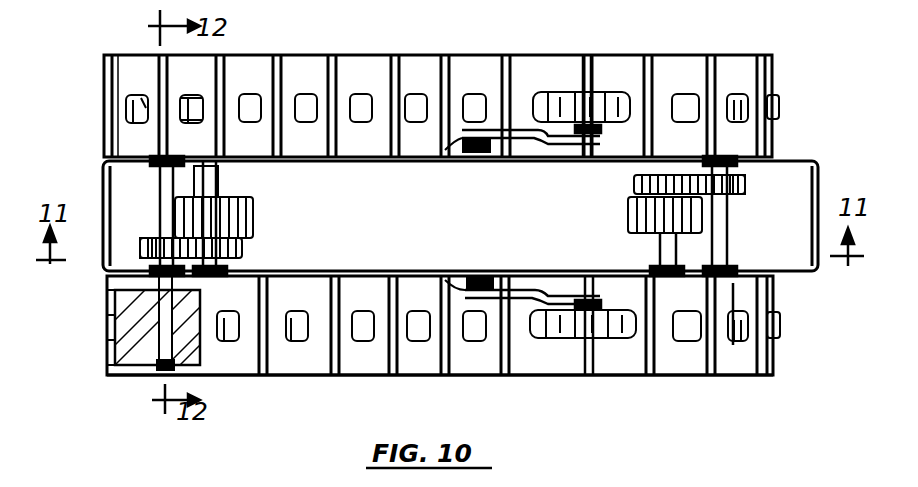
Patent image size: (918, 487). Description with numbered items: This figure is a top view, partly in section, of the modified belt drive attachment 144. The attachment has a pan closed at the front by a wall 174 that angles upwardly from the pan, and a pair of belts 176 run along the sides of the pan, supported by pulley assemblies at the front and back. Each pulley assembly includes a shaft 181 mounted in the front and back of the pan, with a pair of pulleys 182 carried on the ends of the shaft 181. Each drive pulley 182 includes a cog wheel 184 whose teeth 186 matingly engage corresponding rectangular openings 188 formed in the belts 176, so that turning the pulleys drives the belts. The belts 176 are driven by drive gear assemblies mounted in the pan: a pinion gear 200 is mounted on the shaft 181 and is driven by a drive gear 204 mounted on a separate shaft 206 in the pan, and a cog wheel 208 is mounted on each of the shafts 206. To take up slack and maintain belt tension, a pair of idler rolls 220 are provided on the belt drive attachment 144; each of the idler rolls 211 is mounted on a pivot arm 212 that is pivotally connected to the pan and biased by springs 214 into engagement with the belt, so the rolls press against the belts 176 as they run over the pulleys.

The belt drive attachment 144 is at (733, 372).
The front wall 174 is at (806, 166).
The belts 176 is at (776, 360).
The shaft 181 is at (120, 184).
The pulleys 182 is at (782, 105).
The cog wheel 184 is at (193, 352).
The teeth 186 is at (192, 95).
The rectangular openings 188 is at (686, 98).
The pinion gear 200 is at (130, 262).
The drive gear 204 is at (246, 248).
The shaft 206 is at (228, 196).
The cog wheel 208 is at (256, 214).
The idler rolls 211 is at (598, 92).
The pivot arm 212 is at (545, 145).
The springs 214 is at (502, 160).
The idler rolls 220 is at (517, 104).